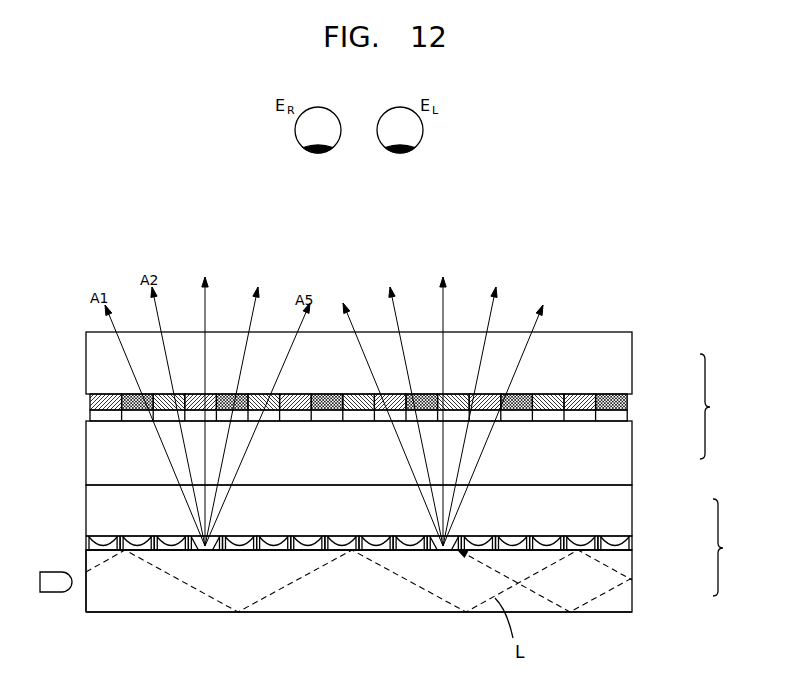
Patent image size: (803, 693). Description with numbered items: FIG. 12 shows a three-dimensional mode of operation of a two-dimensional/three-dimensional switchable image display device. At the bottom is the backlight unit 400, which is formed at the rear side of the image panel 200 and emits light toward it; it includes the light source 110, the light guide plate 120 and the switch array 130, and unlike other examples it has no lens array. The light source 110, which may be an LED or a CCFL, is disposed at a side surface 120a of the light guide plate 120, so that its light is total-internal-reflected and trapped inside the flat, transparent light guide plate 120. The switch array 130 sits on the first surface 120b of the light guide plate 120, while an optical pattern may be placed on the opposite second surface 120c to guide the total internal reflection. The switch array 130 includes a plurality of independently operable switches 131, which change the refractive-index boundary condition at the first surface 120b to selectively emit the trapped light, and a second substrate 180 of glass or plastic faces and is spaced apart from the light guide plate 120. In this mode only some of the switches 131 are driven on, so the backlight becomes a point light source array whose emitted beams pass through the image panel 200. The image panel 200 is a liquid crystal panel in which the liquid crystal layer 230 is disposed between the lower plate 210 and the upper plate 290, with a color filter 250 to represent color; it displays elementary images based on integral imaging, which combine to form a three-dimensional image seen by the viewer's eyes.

The light source 110 is at (48, 592).
The light guide plate 120 is at (641, 586).
The side surface of the light guide plate 120a is at (85, 558).
The first surface of the light guide plate 120b is at (632, 552).
The second surface of the light guide plate 120c is at (605, 612).
The switch array 130 is at (641, 539).
The switches 131 is at (201, 550).
The second substrate 180 is at (632, 505).
The image panel 200 is at (725, 406).
The lower plate 210 is at (632, 452).
The liquid crystal layer 230 is at (627, 418).
The color filter 250 is at (627, 404).
The upper plate 290 is at (632, 363).
The backlight unit 400 is at (738, 547).